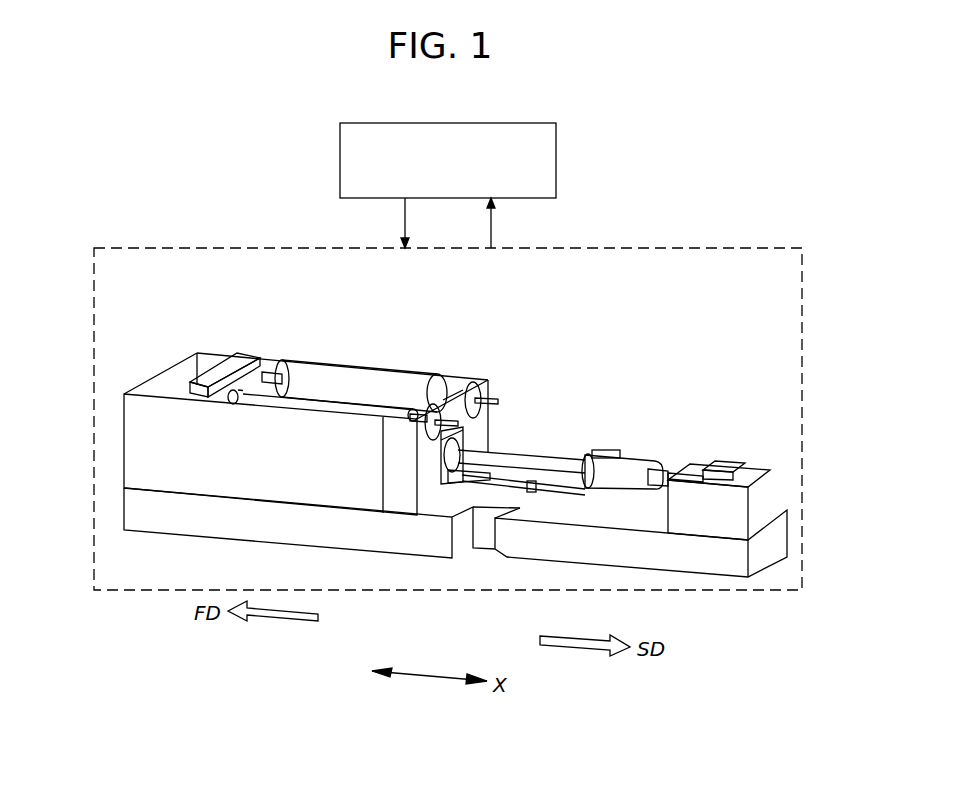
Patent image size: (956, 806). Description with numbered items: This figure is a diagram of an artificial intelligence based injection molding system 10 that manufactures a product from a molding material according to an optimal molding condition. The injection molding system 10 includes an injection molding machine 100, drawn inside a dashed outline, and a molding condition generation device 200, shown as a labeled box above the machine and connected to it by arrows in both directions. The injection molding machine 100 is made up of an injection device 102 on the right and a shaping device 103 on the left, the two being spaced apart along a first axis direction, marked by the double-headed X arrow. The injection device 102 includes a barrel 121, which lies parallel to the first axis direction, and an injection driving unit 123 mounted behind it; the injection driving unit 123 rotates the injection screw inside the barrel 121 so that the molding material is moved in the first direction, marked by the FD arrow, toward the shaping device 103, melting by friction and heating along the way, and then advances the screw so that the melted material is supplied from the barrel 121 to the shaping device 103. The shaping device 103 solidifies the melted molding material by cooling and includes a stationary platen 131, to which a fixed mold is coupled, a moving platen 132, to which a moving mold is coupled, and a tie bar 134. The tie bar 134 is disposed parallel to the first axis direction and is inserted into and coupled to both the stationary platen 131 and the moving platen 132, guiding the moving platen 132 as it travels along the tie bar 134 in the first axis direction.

The injection molding system 10 is at (100, 113).
The molding condition generation device 200 is at (556, 165).
The injection molding machine 100 is at (718, 248).
The shaping device 103 is at (245, 296).
The moving platen 132 is at (252, 360).
The tie bar 134 is at (343, 388).
The stationary platen 131 is at (457, 407).
The injection device 102 is at (530, 384).
The barrel 121 is at (537, 463).
The injection driving unit 123 is at (727, 464).